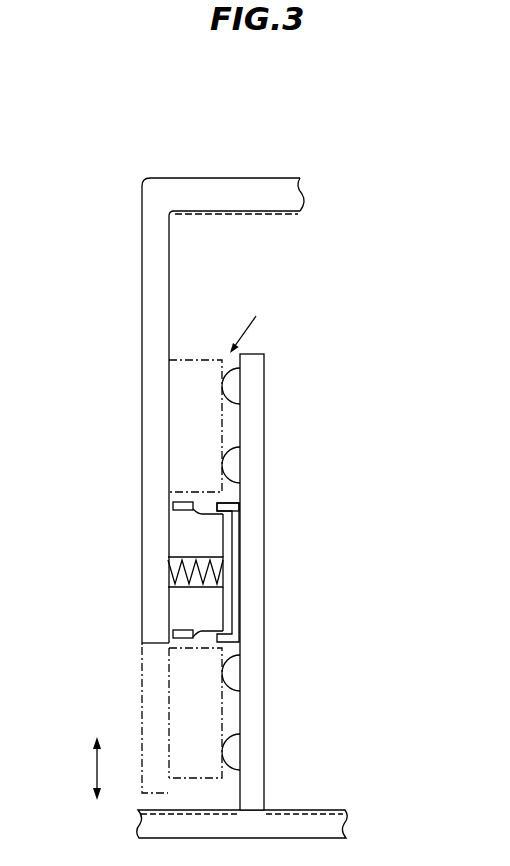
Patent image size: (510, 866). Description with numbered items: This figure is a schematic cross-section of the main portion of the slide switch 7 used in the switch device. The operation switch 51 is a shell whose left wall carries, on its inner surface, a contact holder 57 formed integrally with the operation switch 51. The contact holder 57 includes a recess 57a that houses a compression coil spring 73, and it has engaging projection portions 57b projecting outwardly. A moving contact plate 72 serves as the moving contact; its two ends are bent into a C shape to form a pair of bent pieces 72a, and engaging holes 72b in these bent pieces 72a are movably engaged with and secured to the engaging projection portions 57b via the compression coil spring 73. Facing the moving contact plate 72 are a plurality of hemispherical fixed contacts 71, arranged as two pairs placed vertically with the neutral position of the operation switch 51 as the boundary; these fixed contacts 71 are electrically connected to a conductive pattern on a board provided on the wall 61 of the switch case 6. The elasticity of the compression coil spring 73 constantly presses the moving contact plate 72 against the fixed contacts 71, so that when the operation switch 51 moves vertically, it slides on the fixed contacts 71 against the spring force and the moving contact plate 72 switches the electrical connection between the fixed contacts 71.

The operation switch 51 is at (150, 243).
The switch case 6 is at (303, 820).
The slide switch 7 is at (249, 322).
The fixed contacts 71 is at (279, 566).
The moving contact plate 72 is at (235, 533).
The bent pieces 72a is at (228, 503).
The engaging holes 72b is at (215, 504).
The compression coil spring 73 is at (232, 572).
The wall 61 is at (248, 603).
The contact holder 57 is at (187, 606).
The recess 57a is at (172, 567).
The engaging projection portions 57b is at (193, 512).